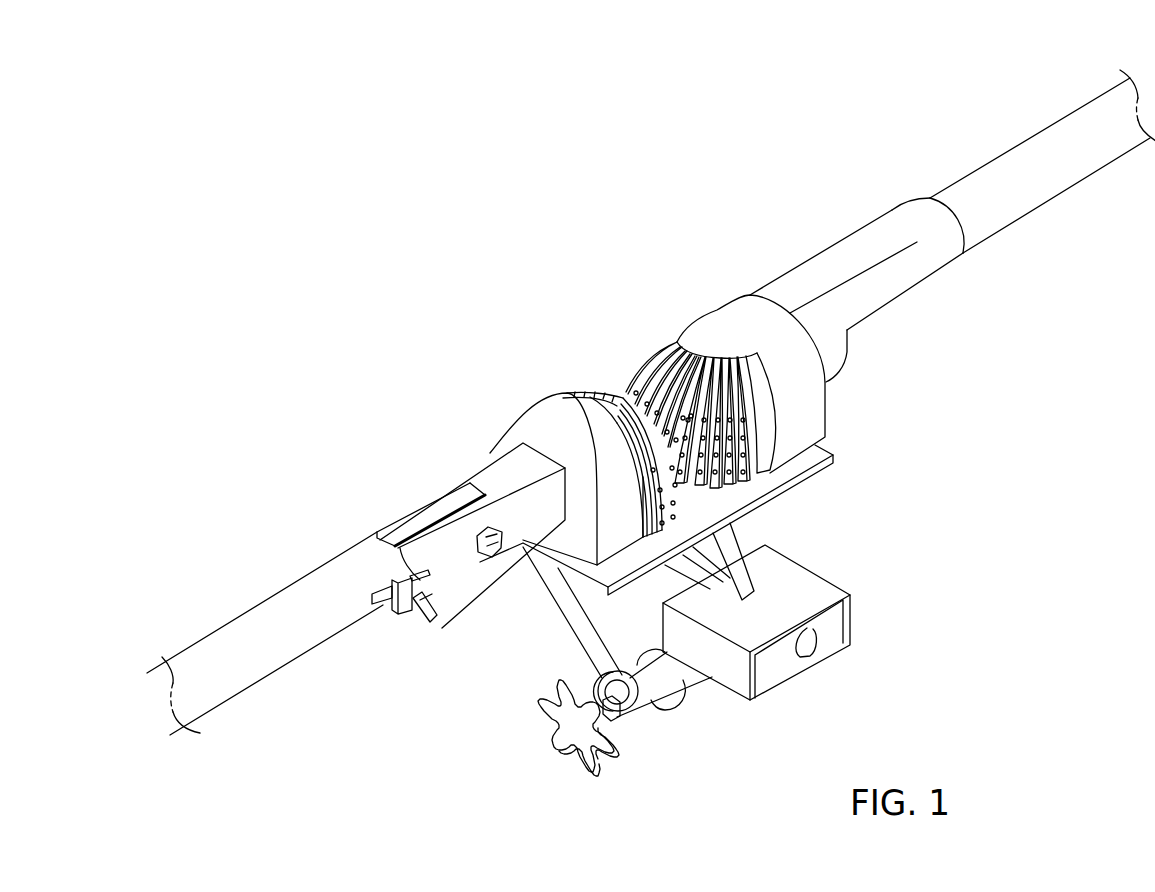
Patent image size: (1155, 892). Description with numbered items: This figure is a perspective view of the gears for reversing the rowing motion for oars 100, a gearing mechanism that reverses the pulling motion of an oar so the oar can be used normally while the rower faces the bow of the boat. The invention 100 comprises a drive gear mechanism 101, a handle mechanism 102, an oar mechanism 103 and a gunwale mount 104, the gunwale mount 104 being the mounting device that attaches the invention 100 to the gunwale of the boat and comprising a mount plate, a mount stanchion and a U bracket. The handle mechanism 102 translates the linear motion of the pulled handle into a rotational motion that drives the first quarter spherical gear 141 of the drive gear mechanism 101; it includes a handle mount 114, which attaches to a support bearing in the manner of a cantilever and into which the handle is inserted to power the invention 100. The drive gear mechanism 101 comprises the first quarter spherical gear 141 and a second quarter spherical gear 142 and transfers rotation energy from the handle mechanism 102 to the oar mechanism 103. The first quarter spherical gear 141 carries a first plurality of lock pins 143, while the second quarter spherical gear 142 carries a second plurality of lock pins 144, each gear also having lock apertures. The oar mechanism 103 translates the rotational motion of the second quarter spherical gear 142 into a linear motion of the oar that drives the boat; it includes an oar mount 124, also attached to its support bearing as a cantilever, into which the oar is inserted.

The gears for reversing the rowing motion for oars 100 is at (434, 186).
The drive gear mechanism 101 is at (638, 367).
The handle mechanism 102 is at (802, 405).
The oar mechanism 103 is at (555, 440).
The gunwale mount 104 is at (822, 468).
The handle mount 114 is at (848, 252).
The oar mount 124 is at (487, 482).
The first quarter spherical gear 141 is at (683, 345).
The second quarter spherical gear 142 is at (588, 393).
The first plurality of lock pins 143 is at (730, 473).
The second plurality of lock pins 144 is at (663, 530).